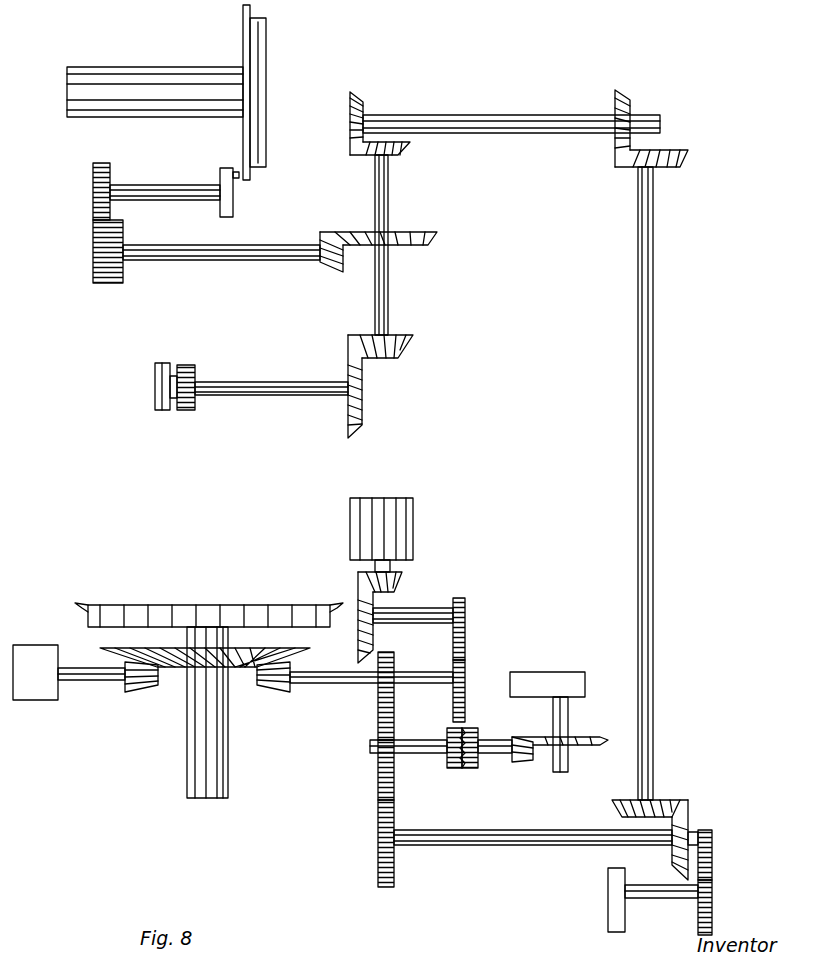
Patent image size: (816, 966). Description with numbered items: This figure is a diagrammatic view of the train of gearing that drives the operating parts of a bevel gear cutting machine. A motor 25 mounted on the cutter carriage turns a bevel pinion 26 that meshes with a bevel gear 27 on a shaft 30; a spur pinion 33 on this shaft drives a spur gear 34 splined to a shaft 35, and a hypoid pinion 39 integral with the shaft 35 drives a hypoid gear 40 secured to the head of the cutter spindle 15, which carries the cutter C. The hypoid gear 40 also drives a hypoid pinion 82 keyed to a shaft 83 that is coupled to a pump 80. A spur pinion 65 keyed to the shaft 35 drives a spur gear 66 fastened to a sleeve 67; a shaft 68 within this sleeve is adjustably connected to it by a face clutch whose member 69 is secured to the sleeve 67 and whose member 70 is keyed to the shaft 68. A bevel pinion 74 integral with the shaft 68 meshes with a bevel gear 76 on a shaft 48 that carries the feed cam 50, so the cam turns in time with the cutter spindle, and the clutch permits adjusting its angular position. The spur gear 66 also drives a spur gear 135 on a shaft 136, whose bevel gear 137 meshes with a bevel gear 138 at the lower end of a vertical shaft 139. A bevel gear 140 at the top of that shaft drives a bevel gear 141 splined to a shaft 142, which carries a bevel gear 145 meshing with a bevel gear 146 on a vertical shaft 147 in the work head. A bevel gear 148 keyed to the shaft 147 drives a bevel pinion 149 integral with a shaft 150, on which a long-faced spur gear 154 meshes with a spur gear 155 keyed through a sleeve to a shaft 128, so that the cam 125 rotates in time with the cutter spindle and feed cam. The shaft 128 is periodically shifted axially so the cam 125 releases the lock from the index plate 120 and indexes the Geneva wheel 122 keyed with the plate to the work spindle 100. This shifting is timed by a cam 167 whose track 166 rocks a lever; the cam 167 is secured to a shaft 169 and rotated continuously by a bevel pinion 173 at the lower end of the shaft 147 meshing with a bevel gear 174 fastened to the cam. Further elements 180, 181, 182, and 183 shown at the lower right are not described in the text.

The work spindle 100 is at (167, 78).
The notched index plate 120 is at (265, 100).
The Geneva wheel 122 is at (243, 30).
The cam 125 is at (233, 200).
The shaft 128 is at (168, 183).
The spur gear 155 is at (93, 190).
The long-faced spur gear 154 is at (107, 284).
The shaft 150 is at (232, 262).
The bevel pinion 149 is at (326, 274).
The bevel gear 148 is at (436, 240).
The vertical shaft 147 is at (390, 292).
The bevel gear 146 is at (410, 150).
The bevel gear 145 is at (360, 96).
The shaft 142 is at (504, 118).
The bevel gear 141 is at (627, 97).
The bevel gear 140 is at (688, 160).
The vertical shaft 139 is at (656, 648).
The cam track 166 is at (165, 364).
The cam 167 is at (195, 372).
The shaft 169 is at (268, 395).
The bevel pinion 173 is at (404, 352).
The bevel gear 174 is at (364, 404).
The motor 25 is at (414, 528).
The bevel pinion 26 is at (400, 584).
The bevel gear 27 is at (360, 640).
The shaft 30 is at (425, 616).
The spur pinion 33 is at (466, 610).
The spur gear 34 is at (466, 655).
The shaft 35 is at (340, 684).
The spur pinion 65 is at (394, 668).
The spur gear 66 is at (378, 770).
The spur gear 135 is at (378, 870).
The cutter C is at (222, 612).
The cutter spindle 15 is at (222, 752).
The hypoid gear 40 is at (245, 668).
The hypoid pinion 39 is at (272, 693).
The hypoid pinion 82 is at (138, 693).
The shaft 83 is at (97, 682).
The pump 80 is at (40, 700).
The feed cam 50 is at (568, 680).
The shaft 48 is at (568, 722).
The sleeve 67 is at (425, 740).
The shaft 68 is at (495, 755).
The clutch member 69 is at (452, 769).
The clutch member 70 is at (478, 732).
The bevel pinion 74 is at (526, 763).
The bevel gear 76 is at (585, 746).
The shaft 136 is at (466, 846).
The bevel gear 138 is at (615, 808).
The bevel gear 137 is at (672, 856).
The gear 181 is at (708, 830).
The gear 182 is at (712, 893).
The disc 180 is at (616, 912).
The shaft 183 is at (652, 900).